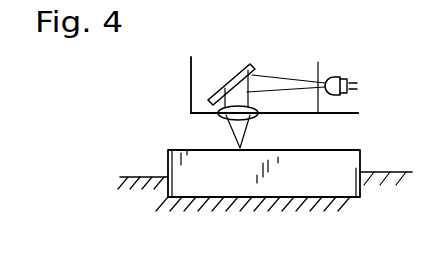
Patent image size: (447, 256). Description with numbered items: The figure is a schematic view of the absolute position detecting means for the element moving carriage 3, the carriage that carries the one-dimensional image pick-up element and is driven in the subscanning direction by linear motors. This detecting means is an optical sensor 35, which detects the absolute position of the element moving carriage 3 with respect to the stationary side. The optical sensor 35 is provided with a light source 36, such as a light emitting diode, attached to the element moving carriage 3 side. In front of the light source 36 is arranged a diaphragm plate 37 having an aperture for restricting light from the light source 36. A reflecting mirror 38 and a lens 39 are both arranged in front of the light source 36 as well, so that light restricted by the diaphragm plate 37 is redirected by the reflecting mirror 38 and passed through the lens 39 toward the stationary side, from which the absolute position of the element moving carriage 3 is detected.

The element moving carriage 3 is at (206, 77).
The optical sensor 35 is at (337, 176).
The light source 36 is at (337, 77).
The diaphragm plate 37 is at (323, 100).
The reflecting mirror 38 is at (227, 85).
The lens 39 is at (221, 117).